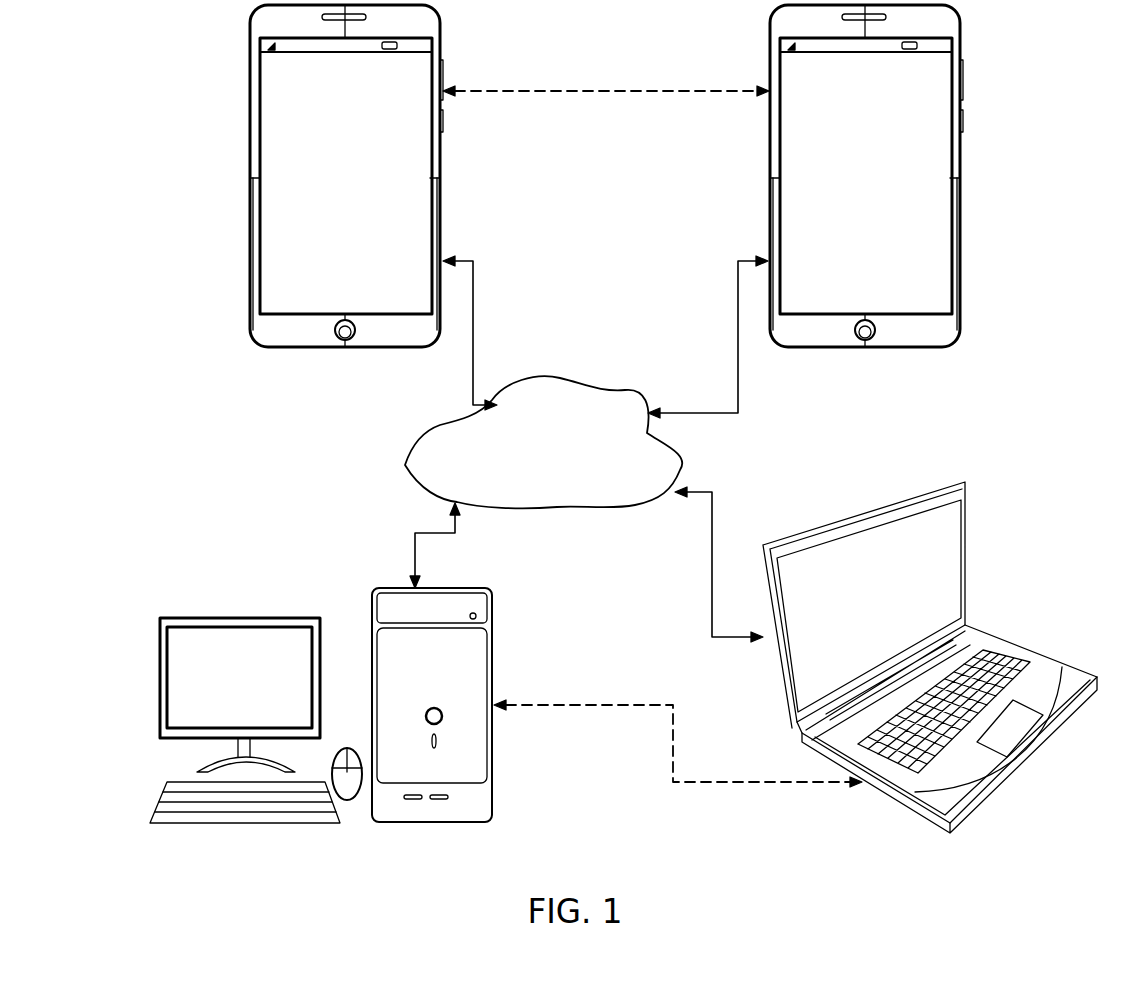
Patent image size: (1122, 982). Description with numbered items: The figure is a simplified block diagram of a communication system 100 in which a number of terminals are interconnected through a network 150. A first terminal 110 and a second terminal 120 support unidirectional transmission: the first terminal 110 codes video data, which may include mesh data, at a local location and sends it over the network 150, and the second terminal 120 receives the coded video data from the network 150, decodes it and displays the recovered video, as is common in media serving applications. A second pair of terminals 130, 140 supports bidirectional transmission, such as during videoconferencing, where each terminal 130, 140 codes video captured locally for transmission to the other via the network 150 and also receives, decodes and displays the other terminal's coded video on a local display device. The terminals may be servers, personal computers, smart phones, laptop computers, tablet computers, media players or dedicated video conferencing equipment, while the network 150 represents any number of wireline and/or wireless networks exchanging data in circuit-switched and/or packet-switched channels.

The communication system 100 is at (142, 71).
The first terminal 110 is at (965, 535).
The second terminal 120 is at (492, 790).
The terminal 130 is at (313, 176).
The terminal 140 is at (769, 118).
The network 150 is at (525, 437).